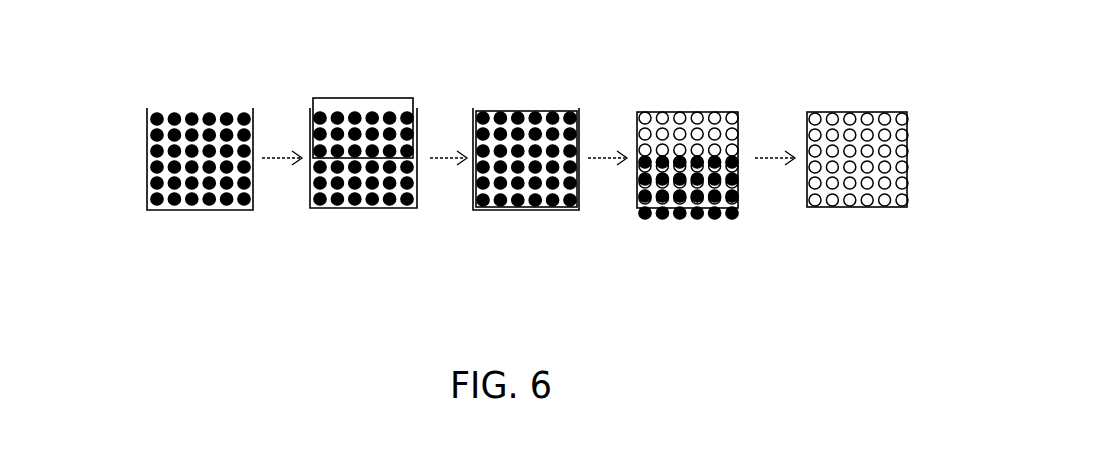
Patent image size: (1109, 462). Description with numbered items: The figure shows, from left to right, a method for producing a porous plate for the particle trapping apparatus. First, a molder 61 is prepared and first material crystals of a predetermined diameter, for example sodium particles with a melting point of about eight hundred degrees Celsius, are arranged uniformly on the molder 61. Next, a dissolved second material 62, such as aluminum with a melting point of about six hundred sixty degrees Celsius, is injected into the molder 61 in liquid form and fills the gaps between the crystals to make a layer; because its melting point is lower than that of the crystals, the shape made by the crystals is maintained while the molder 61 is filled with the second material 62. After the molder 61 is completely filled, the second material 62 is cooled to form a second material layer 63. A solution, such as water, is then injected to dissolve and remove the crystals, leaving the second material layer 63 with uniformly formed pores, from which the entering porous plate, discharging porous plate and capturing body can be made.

The molder 61 is at (148, 160).
The second material 62 is at (325, 105).
The second material layer 63 is at (727, 115).